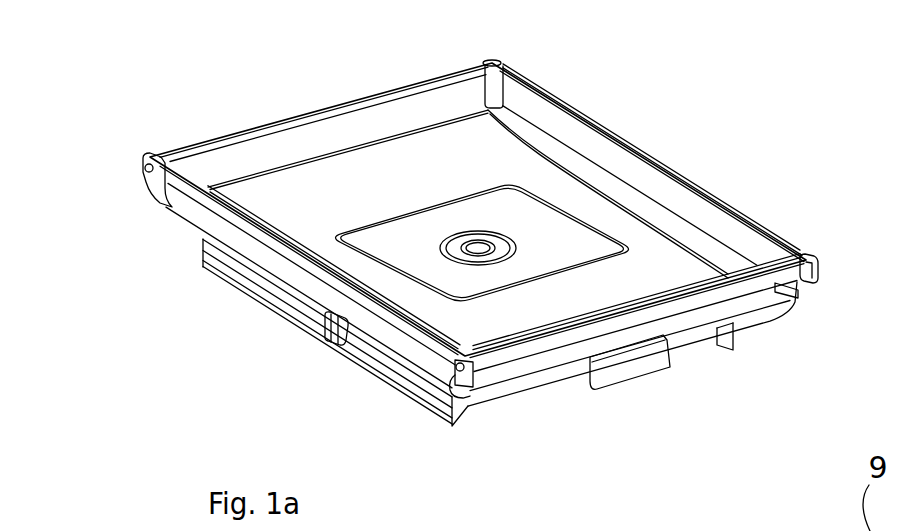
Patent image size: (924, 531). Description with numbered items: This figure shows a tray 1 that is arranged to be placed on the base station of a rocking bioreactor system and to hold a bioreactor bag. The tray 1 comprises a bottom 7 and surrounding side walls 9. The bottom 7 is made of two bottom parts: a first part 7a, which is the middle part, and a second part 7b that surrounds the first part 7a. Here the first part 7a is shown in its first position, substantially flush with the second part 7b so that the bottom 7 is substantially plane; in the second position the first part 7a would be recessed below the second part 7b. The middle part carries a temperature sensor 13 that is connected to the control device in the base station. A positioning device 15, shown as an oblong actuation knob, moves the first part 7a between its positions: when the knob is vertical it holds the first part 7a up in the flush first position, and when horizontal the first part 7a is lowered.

The tray 1 is at (532, 263).
The bottom 7 is at (540, 269).
The first part 7a is at (400, 260).
The second part 7b is at (676, 263).
The side walls 9 is at (258, 140).
The temperature sensor 13 is at (476, 252).
The positioning device 15 is at (325, 343).